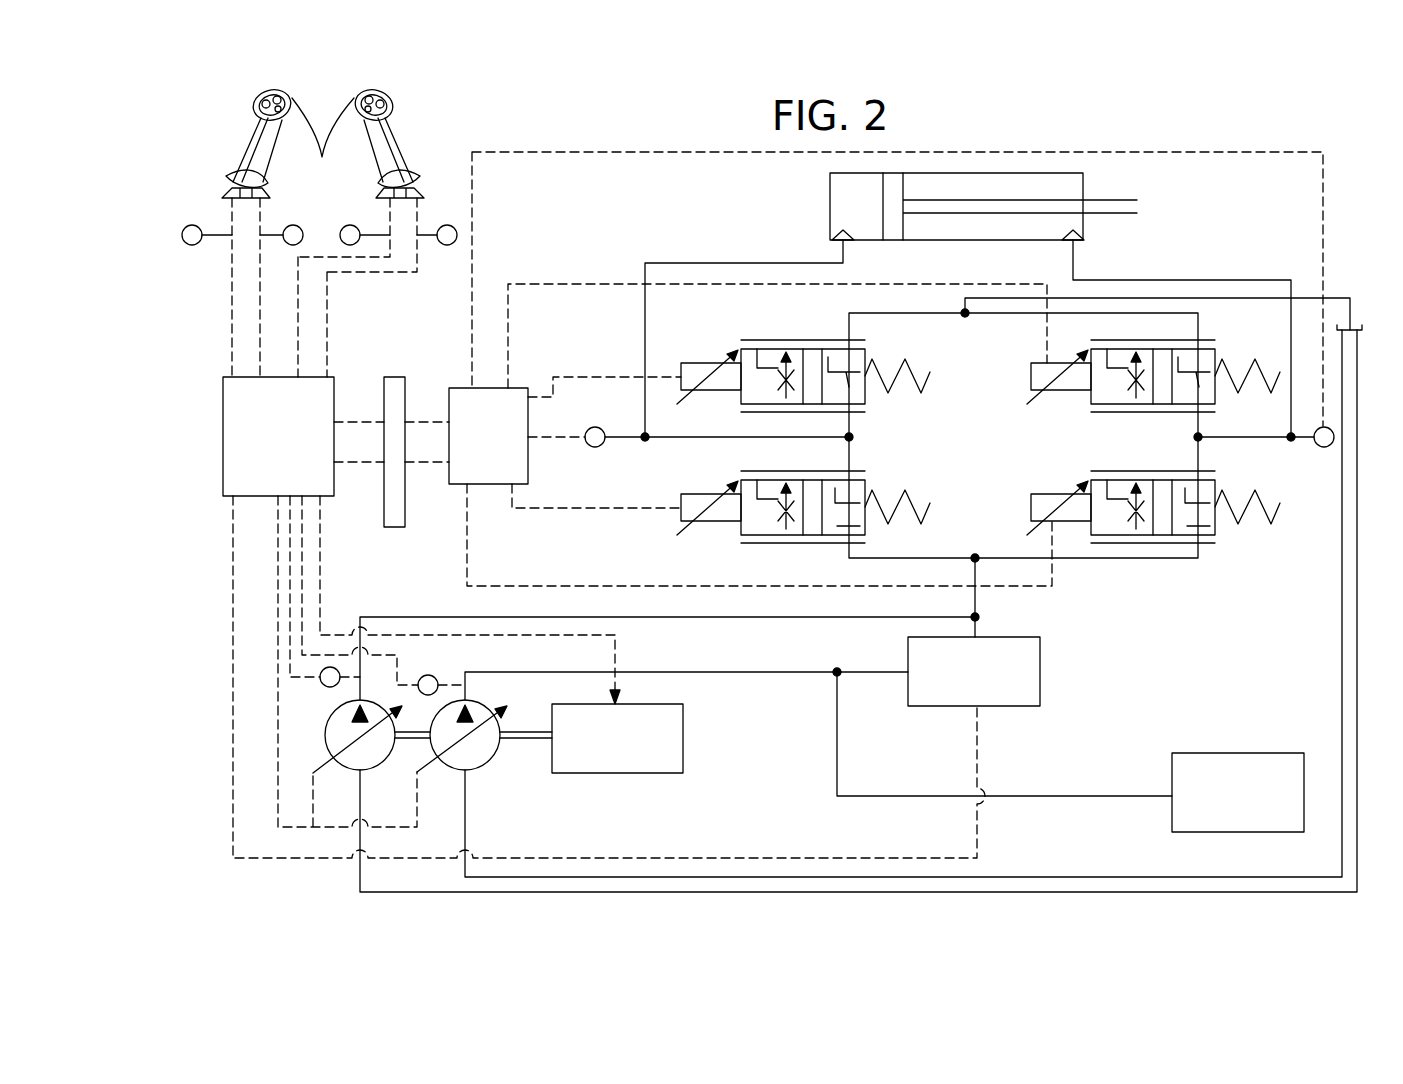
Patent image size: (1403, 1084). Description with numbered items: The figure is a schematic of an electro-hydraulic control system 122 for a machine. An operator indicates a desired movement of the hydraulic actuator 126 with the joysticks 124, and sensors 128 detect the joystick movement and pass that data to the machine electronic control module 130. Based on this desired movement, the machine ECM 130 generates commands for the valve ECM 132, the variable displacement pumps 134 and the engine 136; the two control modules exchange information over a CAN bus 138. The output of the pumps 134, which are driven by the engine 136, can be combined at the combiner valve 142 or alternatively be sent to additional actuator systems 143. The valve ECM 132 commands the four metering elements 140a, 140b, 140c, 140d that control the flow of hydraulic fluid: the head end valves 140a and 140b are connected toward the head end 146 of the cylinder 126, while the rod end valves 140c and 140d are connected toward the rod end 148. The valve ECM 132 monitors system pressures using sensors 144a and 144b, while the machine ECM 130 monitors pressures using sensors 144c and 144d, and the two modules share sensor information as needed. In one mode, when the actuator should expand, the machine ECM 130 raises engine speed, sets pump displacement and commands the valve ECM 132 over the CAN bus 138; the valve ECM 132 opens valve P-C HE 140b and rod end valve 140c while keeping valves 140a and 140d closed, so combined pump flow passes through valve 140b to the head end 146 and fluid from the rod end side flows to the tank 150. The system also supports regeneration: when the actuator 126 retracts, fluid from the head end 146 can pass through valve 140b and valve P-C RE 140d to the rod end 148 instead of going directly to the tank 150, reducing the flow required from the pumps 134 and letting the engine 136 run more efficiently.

The electro-hydraulic control system 122 is at (520, 150).
The joysticks 124 is at (323, 231).
The hydraulic actuator 126 is at (975, 173).
The sensors 128 is at (447, 246).
The machine electronic control module (ECM) 130 is at (223, 420).
The valve ECM 132 is at (449, 392).
The variable displacement pumps 134 is at (432, 752).
The engine 136 is at (645, 773).
The CAN bus 138 is at (384, 495).
The head end valve (C-T HE) 140a is at (870, 404).
The head end valve P-C HE 140b is at (870, 536).
The rod end valve (C-T RE) 140c is at (1215, 404).
The rod end valve P-C RE 140d is at (1200, 558).
The combiner valve 142 is at (1002, 706).
The additional actuator systems 143 is at (1238, 753).
The pressure sensor 144a is at (1320, 447).
The pressure sensor 144b is at (600, 446).
The pressure sensor 144c is at (325, 686).
The pressure sensor 144d is at (435, 677).
The head end 146 is at (843, 262).
The rod end 148 is at (1078, 262).
The tank 150 is at (1362, 328).